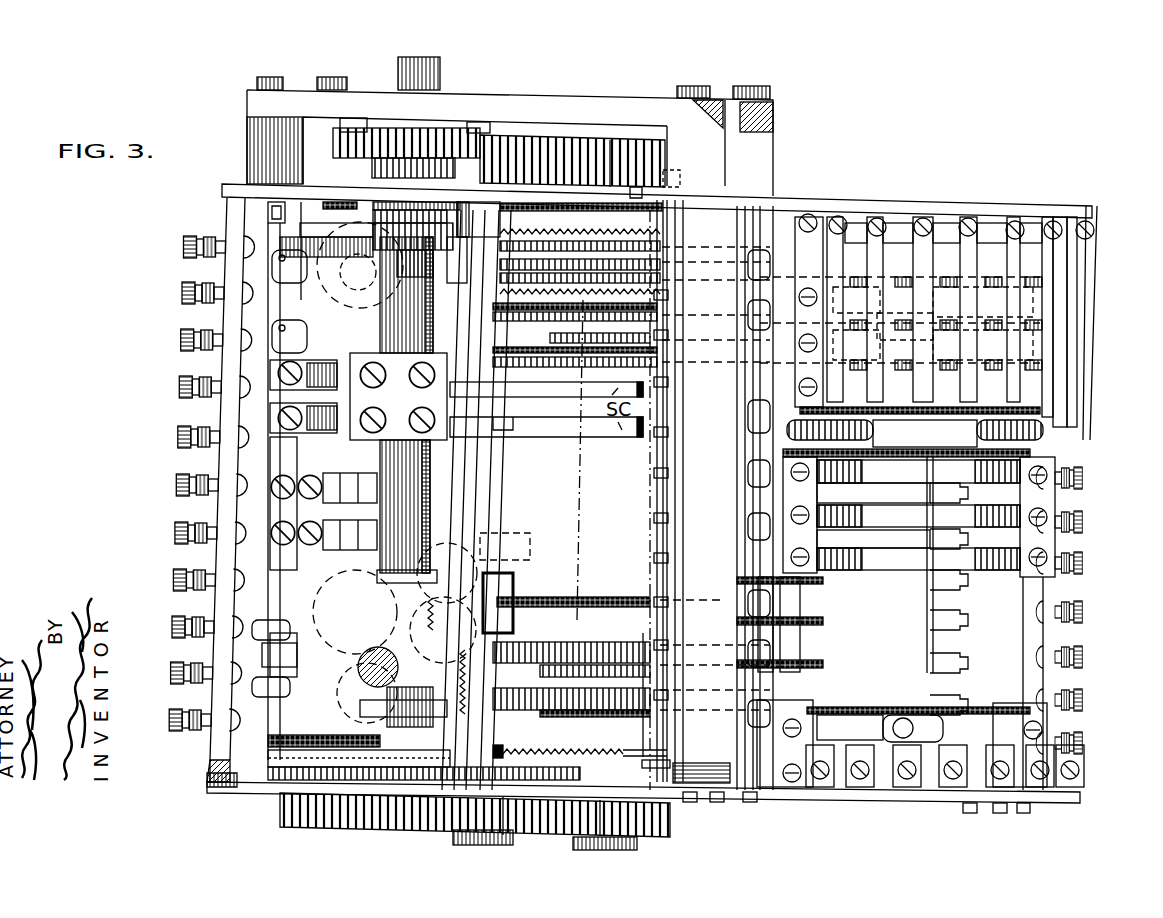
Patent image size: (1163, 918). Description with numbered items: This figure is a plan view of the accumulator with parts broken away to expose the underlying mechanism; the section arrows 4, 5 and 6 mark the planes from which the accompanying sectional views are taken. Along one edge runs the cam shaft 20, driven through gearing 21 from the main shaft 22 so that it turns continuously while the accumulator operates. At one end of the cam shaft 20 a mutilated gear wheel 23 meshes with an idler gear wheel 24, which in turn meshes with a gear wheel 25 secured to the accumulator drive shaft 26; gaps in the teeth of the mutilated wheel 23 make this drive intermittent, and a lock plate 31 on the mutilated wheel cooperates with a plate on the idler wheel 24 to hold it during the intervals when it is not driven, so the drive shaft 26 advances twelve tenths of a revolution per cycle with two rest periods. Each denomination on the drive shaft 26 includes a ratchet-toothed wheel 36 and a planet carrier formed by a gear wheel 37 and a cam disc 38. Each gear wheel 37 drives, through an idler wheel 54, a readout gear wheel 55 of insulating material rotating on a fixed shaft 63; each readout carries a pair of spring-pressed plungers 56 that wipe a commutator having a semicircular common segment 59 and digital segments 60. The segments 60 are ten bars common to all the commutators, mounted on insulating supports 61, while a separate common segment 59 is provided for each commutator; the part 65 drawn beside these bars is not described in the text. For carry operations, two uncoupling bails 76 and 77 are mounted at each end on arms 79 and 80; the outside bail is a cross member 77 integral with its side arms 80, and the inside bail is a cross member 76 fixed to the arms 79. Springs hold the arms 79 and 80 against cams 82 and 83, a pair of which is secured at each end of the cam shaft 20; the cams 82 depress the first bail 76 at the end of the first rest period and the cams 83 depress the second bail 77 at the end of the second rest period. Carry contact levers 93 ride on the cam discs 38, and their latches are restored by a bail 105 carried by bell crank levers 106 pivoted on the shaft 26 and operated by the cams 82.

The section line 4- 4 is at (145, 703).
The section line 5- 5 is at (147, 302).
The section line 6- 6 is at (482, 223).
The cam shaft 20 is at (397, 467).
The gearing 21 is at (390, 807).
The main shaft 22 is at (637, 843).
The mutilated gear wheel 23 is at (357, 140).
The idler gear wheel 24 is at (550, 145).
The gear wheel 25 is at (636, 198).
The accumulator drive shaft 26 is at (664, 170).
The lock plate 31 is at (345, 124).
The ratchet-toothed wheel 36 is at (562, 707).
The gear wheel 37 is at (522, 690).
The cam disc 38 is at (550, 597).
The idler wheel 54 is at (823, 663).
The readout gear wheel 55 is at (848, 708).
The plungers 56 is at (830, 430).
The common segment 59 is at (893, 553).
The digital segments 60 is at (1053, 268).
The insulating supports 61 is at (988, 217).
The fixed shaft 63 is at (905, 478).
The terminal block 65 is at (1060, 456).
The first uncoupling bail 76 is at (453, 473).
The second uncoupling bail 77 is at (470, 493).
The arms 79 is at (300, 231).
The side arms 80 is at (312, 214).
The cams 82 is at (372, 234).
The cams 83 is at (368, 202).
The carry contact lever 93 is at (543, 683).
The bail 105 is at (667, 497).
The bell crank levers 106 is at (650, 750).